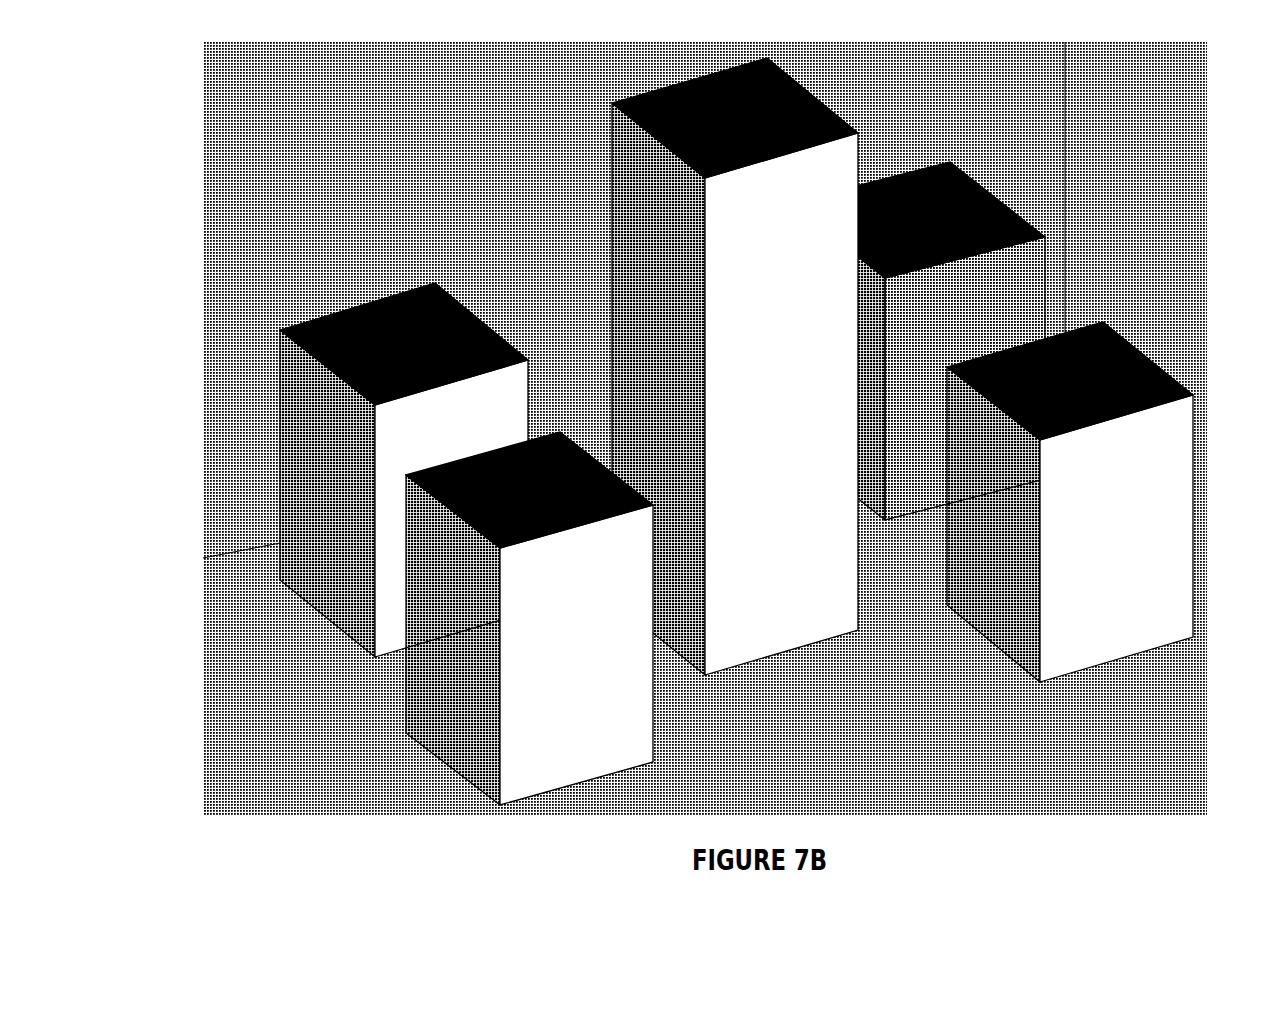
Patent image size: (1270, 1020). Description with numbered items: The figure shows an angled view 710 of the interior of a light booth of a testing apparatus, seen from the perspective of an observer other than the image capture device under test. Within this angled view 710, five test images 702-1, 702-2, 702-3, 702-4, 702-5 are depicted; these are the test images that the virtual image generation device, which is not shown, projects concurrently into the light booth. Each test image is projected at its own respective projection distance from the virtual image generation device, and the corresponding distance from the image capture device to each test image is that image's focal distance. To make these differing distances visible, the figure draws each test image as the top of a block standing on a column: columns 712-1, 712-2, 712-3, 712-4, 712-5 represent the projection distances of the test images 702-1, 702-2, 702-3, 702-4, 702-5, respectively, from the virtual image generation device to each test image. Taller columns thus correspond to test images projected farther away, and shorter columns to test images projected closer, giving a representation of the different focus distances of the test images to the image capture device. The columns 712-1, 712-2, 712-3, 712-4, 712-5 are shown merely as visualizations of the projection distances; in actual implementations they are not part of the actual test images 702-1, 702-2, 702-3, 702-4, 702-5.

The angled view 710 is at (136, 140).
The test image 702-1 is at (460, 303).
The test image 702-2 is at (632, 485).
The test image 702-3 is at (842, 118).
The test image 702-4 is at (970, 177).
The test image 702-5 is at (1160, 363).
The column 712-1 is at (278, 442).
The column 712-2 is at (655, 693).
The column 712-3 is at (610, 162).
The column 712-4 is at (1045, 295).
The column 712-5 is at (1197, 518).